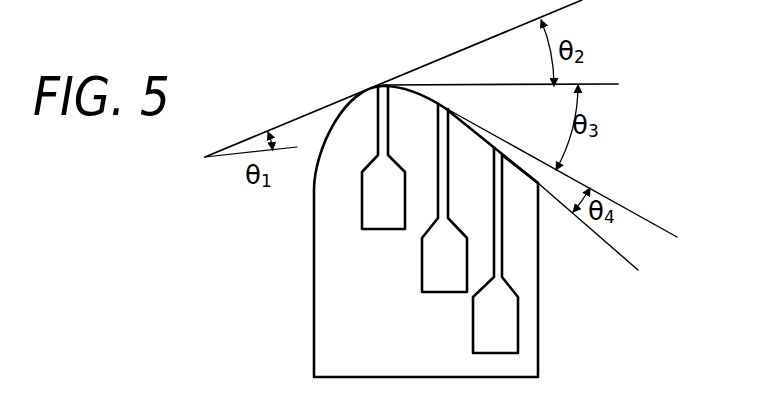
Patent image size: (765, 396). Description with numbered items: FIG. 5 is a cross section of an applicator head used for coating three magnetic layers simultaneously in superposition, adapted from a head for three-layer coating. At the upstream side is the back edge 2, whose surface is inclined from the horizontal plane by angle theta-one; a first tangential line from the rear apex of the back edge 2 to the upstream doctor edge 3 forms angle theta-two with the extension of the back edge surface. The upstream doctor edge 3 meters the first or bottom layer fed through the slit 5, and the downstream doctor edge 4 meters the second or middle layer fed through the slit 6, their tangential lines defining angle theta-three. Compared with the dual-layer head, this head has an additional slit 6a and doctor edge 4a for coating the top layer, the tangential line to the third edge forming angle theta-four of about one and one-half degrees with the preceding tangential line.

The back edge 2 is at (327, 147).
The upstream doctor edge 3 is at (412, 127).
The downstream doctor edge 4 is at (467, 160).
The doctor edge 4a is at (510, 188).
The slit 5 is at (380, 127).
The slit 6 is at (445, 140).
The slit 6a is at (493, 198).